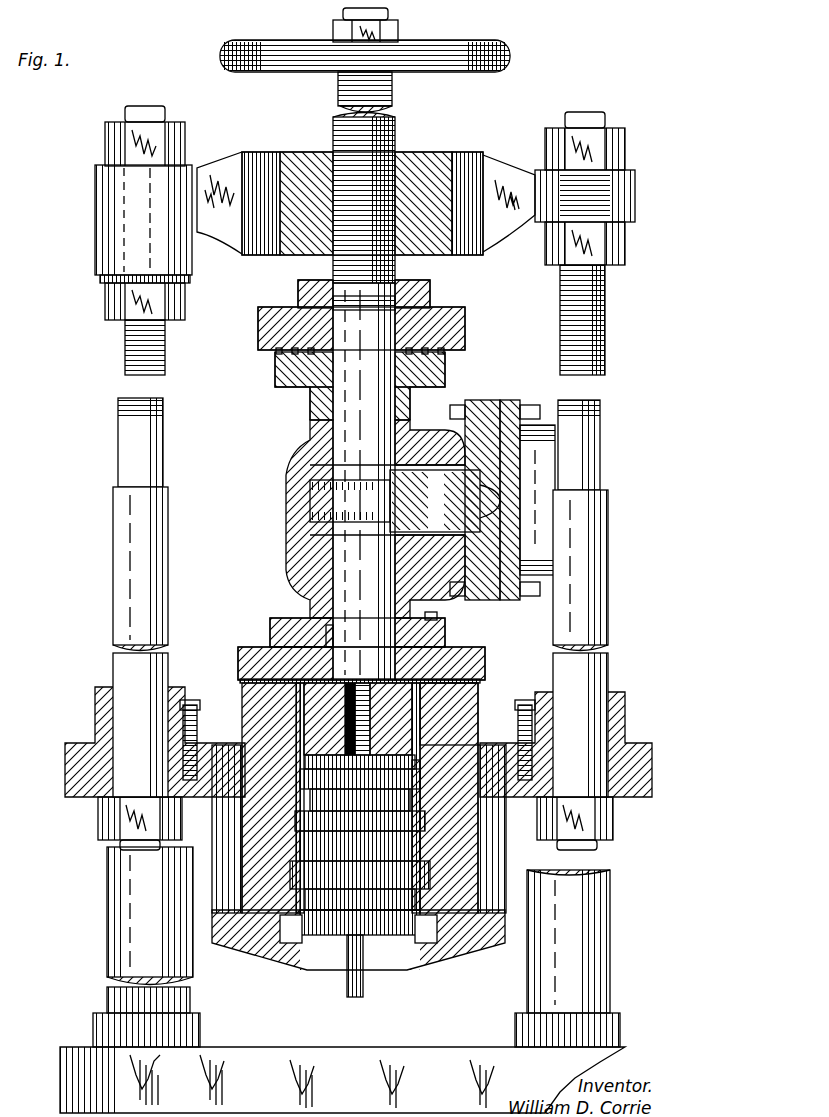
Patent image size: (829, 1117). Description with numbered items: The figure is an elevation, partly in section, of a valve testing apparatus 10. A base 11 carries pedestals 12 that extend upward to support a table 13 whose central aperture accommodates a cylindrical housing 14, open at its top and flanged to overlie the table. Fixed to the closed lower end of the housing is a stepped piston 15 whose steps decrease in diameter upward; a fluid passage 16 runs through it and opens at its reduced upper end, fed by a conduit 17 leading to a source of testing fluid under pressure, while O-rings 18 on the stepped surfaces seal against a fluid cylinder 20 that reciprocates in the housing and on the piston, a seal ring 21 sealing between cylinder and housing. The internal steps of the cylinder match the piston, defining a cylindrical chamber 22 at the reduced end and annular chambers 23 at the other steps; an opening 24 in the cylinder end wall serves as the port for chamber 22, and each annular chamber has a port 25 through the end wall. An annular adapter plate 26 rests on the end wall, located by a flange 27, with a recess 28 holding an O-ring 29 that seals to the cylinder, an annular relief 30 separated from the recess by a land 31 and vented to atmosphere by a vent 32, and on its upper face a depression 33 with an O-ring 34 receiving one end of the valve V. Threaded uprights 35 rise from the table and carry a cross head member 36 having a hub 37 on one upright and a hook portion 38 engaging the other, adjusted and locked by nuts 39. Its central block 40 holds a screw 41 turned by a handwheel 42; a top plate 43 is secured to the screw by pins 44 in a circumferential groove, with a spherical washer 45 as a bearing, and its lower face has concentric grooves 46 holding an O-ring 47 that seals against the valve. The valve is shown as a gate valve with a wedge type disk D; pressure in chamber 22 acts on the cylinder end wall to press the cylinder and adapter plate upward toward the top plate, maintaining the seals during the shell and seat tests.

The valve testing apparatus 10 is at (102, 604).
The base 11 is at (244, 1046).
The pedestals 12 is at (112, 918).
The table 13 is at (645, 762).
The cylindrical housing 14 is at (485, 712).
The stepped piston 15 is at (318, 950).
The fluid passage 16 is at (352, 850).
The conduit 17 is at (364, 982).
The O-rings 18 is at (362, 832).
The fluid cylinder 20 is at (490, 693).
The seal ring 21 is at (246, 702).
The cylindrical chamber 22 is at (378, 719).
The annular chambers 23 is at (418, 855).
The opening 24 is at (325, 719).
The port 25 is at (300, 738).
The adapter plate 26 is at (470, 655).
The flange 27 is at (240, 680).
The recess 28 is at (364, 482).
The O-ring 29 is at (284, 665).
The annular relief 30 is at (434, 665).
The land 31 is at (377, 719).
The vent 32 is at (272, 650).
The depression 33 is at (437, 625).
The O-ring 34 is at (325, 650).
The uprights 35 is at (165, 522).
The cross head member 36 is at (227, 154).
The hub 37 is at (108, 208).
The hook portion 38 is at (636, 198).
The nuts 39 is at (108, 145).
The block 40 is at (430, 157).
The screw 41 is at (340, 138).
The handwheel 42 is at (505, 58).
The top plate 43 is at (468, 317).
The pins 44 is at (300, 292).
The spherical washer 45 is at (381, 315).
The concentric grooves 46 is at (296, 354).
The O-ring 47 is at (360, 386).
The valve V is at (286, 553).
The disk D is at (405, 501).